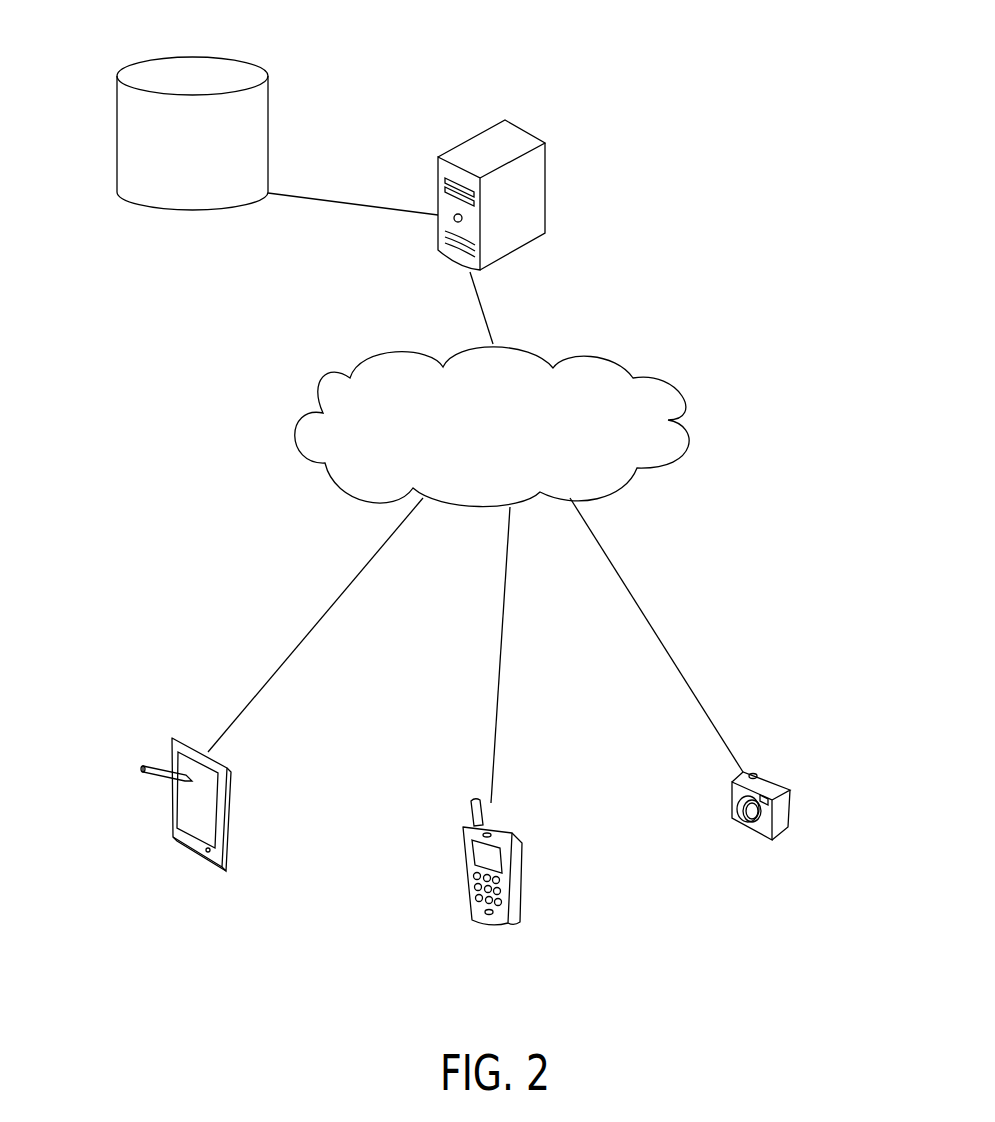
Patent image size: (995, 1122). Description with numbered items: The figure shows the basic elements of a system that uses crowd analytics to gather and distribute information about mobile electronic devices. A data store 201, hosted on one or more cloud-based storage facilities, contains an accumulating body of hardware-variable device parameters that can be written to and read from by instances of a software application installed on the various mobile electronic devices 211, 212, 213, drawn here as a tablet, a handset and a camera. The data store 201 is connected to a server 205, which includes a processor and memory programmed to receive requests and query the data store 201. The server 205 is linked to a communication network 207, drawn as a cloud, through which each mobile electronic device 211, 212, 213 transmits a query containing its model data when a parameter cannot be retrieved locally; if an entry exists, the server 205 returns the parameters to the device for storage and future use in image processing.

The data store 201 is at (165, 57).
The server 205 is at (517, 125).
The network 207 is at (673, 378).
The mobile electronic device 211 is at (198, 853).
The mobile electronic device 212 is at (497, 927).
The mobile electronic device 213 is at (772, 845).